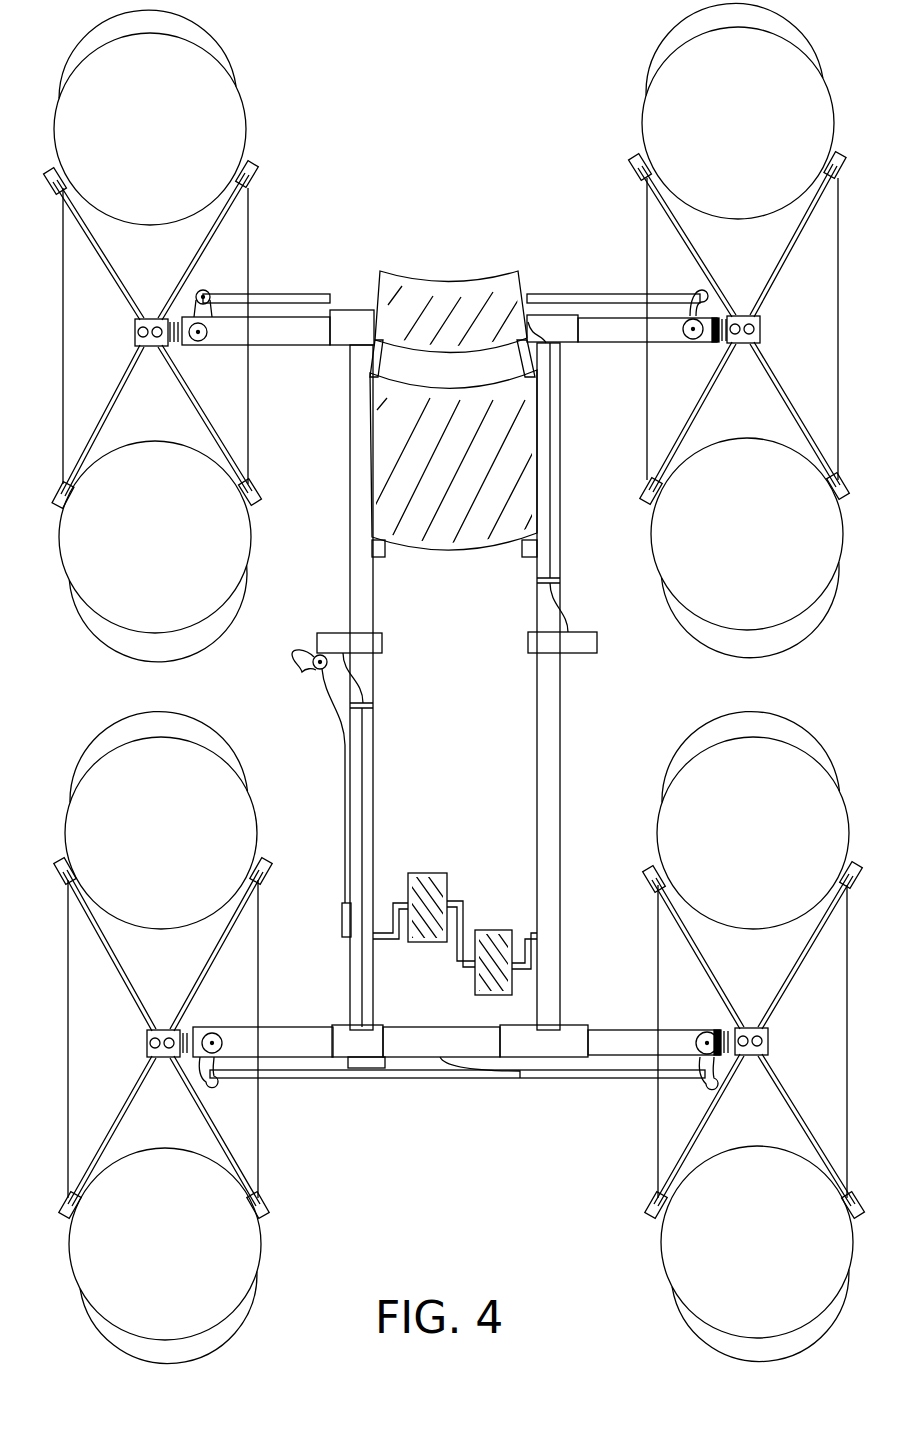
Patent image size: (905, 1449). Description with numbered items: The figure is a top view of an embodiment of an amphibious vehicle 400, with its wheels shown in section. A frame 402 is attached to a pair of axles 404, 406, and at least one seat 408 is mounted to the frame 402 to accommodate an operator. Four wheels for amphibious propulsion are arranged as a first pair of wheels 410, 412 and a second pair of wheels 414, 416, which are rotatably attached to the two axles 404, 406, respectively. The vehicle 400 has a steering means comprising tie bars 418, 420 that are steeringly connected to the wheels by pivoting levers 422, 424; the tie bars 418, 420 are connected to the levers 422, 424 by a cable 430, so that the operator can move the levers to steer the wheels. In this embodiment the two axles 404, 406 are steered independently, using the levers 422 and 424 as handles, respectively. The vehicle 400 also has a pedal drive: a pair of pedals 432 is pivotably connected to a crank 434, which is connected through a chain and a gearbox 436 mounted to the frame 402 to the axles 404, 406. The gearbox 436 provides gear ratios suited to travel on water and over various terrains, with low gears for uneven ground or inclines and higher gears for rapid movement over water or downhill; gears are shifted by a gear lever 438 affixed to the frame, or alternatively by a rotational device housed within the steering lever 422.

The amphibious vehicle 400 is at (460, 93).
The frame 402 is at (562, 712).
The axle 404 is at (215, 1027).
The axle 406 is at (210, 296).
The seat 408 is at (478, 292).
The wheel 410 is at (255, 1136).
The wheel 412 is at (660, 1140).
The wheel 414 is at (243, 218).
The wheel 416 is at (648, 226).
The tie bar 418 is at (404, 1080).
The tie bar 420 is at (355, 308).
The lever 422 is at (337, 634).
The lever 424 is at (580, 640).
The cable 430 is at (375, 748).
The pedal 432 is at (432, 882).
The crank 434 is at (458, 950).
The gearbox 436 is at (345, 921).
The gear lever 438 is at (303, 665).